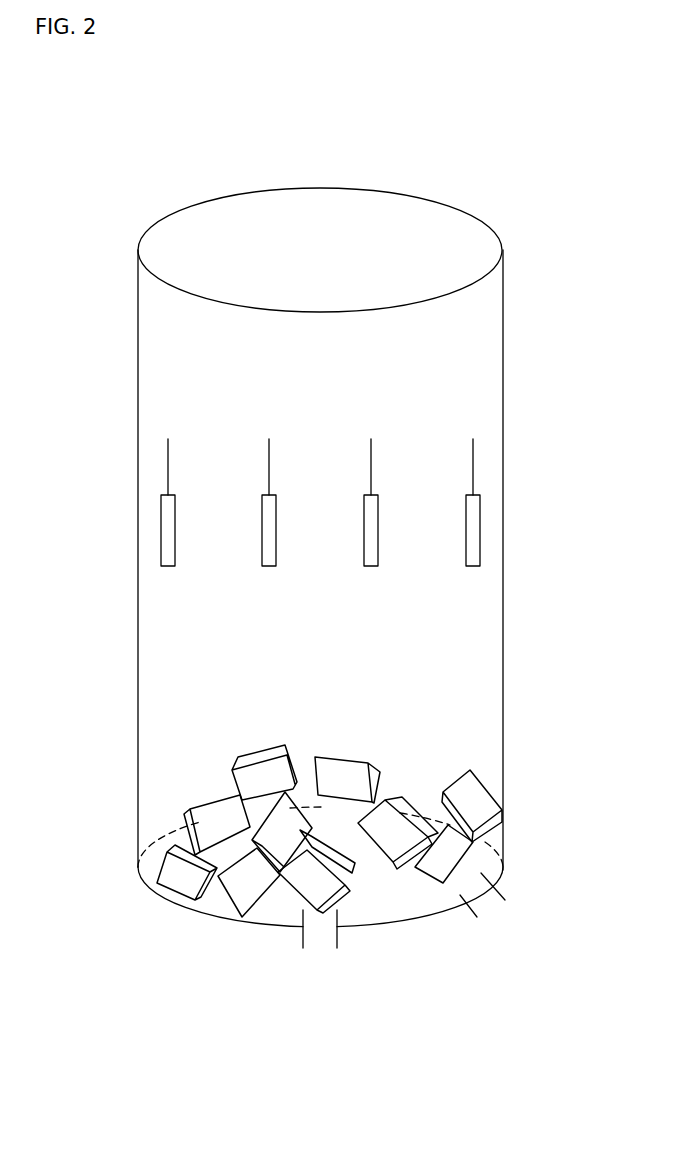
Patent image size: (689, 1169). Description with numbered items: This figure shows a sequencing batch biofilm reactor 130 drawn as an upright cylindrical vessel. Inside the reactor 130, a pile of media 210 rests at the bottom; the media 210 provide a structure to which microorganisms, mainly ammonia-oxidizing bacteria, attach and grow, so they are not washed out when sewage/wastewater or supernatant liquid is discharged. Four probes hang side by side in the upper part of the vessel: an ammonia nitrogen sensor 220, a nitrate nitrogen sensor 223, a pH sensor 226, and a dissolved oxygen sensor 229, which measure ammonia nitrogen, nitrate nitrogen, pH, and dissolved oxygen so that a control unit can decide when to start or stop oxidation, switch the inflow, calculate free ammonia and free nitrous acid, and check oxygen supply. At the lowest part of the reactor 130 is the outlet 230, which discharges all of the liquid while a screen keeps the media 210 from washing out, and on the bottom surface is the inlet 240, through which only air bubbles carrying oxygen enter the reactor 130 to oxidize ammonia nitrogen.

The reactor 130 is at (322, 188).
The media 210 is at (203, 817).
The ammonia nitrogen sensor 220 is at (168, 566).
The nitrate nitrogen sensor 223 is at (269, 566).
The pH sensor 226 is at (371, 566).
The dissolved oxygen sensor 229 is at (473, 566).
The outlet 230 is at (478, 893).
The inlet 240 is at (315, 937).